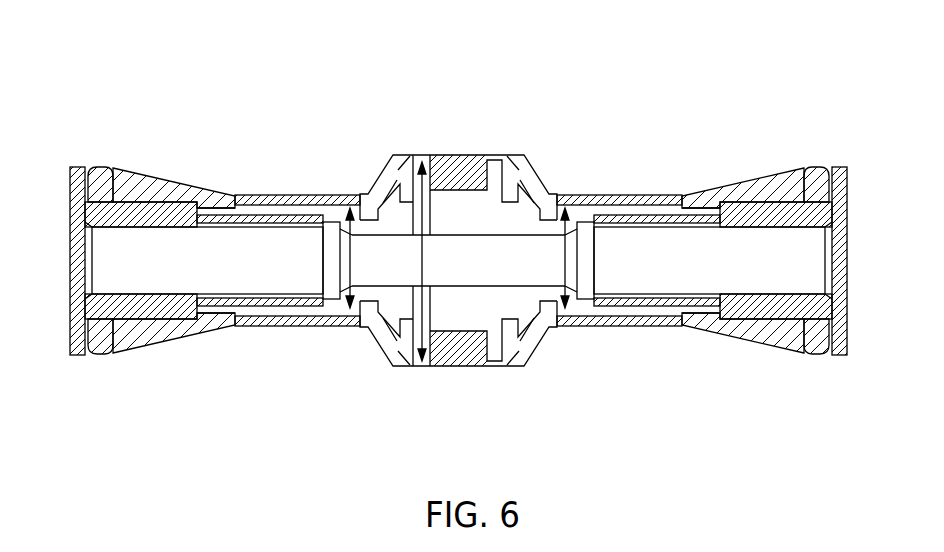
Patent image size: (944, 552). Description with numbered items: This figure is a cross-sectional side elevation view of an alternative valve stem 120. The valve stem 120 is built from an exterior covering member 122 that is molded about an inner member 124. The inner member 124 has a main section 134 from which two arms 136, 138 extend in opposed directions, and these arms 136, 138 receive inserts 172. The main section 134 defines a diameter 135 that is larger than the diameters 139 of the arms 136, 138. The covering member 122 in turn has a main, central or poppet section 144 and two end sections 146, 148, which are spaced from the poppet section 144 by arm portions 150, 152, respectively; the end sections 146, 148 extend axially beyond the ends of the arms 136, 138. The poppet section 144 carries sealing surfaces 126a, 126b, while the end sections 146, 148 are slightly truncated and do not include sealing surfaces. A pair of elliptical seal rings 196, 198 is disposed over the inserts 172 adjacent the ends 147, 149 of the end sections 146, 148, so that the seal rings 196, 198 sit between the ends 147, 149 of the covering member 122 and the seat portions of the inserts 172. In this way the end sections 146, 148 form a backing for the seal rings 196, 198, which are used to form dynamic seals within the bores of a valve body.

The valve stem 120 is at (458, 228).
The covering member 122 is at (580, 188).
The inner member 124 is at (292, 314).
The sealing surface 126a is at (537, 192).
The sealing surface 126b is at (380, 173).
The main section 134 is at (455, 270).
The diameter 135 is at (425, 298).
The arm 136 is at (645, 212).
The arm 138 is at (272, 212).
The diameter 139 is at (352, 250).
The main section 144 is at (458, 368).
The end section 146 is at (762, 192).
The end 147 is at (797, 188).
The end section 148 is at (170, 340).
The end 149 is at (118, 198).
The arm portion 150 is at (618, 328).
The arm portion 152 is at (320, 327).
The insert 172 is at (140, 204).
The seal ring 196 is at (815, 356).
The seal ring 198 is at (100, 357).